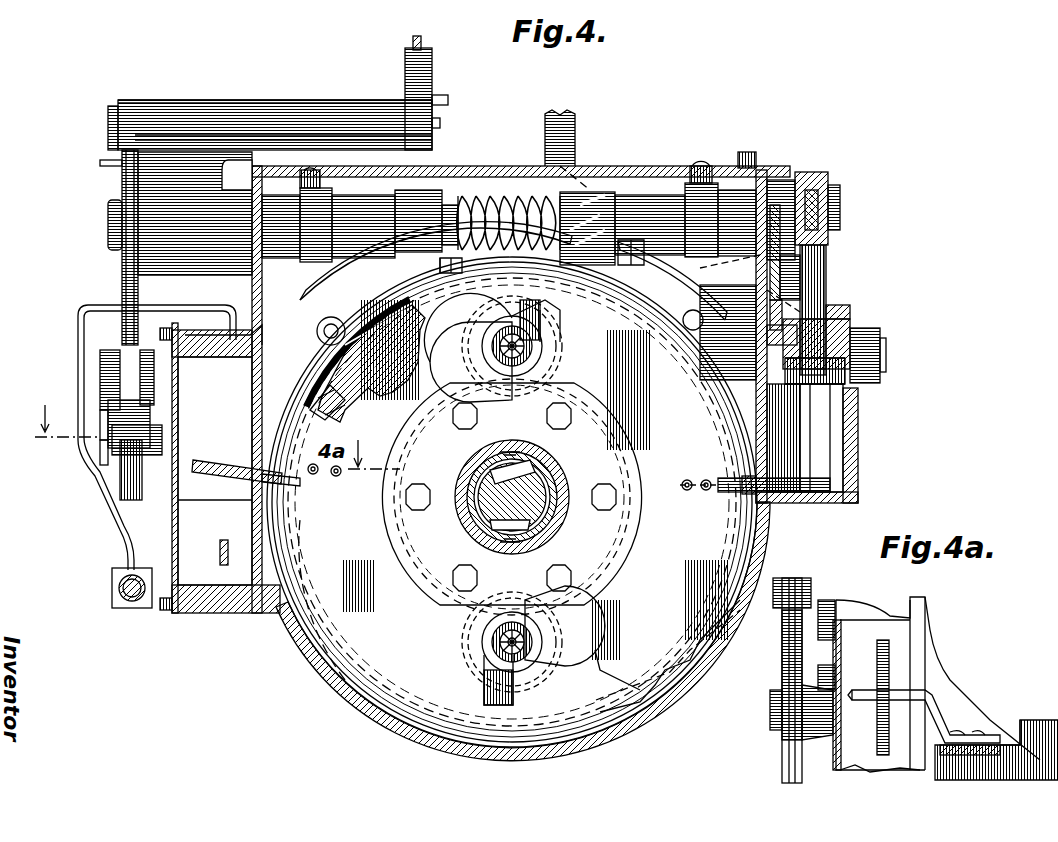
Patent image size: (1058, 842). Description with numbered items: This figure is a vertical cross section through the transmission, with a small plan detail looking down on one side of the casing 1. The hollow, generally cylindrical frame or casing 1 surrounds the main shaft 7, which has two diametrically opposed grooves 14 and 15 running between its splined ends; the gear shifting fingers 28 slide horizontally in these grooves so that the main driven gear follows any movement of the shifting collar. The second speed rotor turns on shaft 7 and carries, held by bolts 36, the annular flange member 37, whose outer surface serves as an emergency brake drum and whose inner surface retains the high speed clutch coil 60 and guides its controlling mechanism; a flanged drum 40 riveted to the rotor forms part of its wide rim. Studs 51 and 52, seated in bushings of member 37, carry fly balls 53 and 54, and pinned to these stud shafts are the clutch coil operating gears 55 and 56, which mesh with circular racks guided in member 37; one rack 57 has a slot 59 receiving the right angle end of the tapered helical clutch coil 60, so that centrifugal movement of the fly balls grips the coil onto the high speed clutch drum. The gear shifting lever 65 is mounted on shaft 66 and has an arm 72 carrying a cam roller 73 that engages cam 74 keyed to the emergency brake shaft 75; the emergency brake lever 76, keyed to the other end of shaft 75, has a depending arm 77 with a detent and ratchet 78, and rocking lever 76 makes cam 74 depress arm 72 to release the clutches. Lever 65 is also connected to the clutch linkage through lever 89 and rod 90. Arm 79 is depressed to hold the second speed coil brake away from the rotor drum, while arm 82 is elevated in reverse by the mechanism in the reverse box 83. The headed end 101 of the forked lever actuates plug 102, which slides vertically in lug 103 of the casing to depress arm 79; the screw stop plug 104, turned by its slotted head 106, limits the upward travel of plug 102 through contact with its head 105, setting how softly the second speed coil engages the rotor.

In FIG. 4, the frame or casing 1 is at (252, 276).
In FIG. 4A, the frame or casing 1 is at (912, 604).
In FIG. 4, the shaft 7 is at (532, 492).
In FIG. 4, the groove 14 is at (520, 475).
In FIG. 4, the groove 15 is at (480, 538).
In FIG. 4, the gear shifting fingers 28 is at (508, 452).
In FIG. 4, the bolts 36 is at (616, 492).
In FIG. 4, the annular flange member 37 is at (388, 626).
In FIG. 4A, the flanged drum 40 is at (1038, 742).
In FIG. 4, the stud 51 is at (528, 348).
In FIG. 4, the stud 52 is at (492, 650).
In FIG. 4, the fly ball 53 is at (466, 356).
In FIG. 4, the fly ball 54 is at (586, 628).
In FIG. 4, the clutch coil operating gear 55 is at (560, 376).
In FIG. 4, the clutch coil operating gear 56 is at (482, 640).
In FIG. 4, the circular rack 57 is at (368, 332).
In FIG. 4, the slot 59 is at (328, 334).
In FIG. 4, the clutch coil 60 is at (348, 410).
In FIG. 4, the gear shifting lever 65 is at (566, 135).
In FIG. 4, the shaft 66 is at (884, 360).
In FIG. 4, the arm 72 is at (770, 320).
In FIG. 4, the cam roller 73 is at (800, 300).
In FIG. 4, the cam 74 is at (780, 290).
In FIG. 4, the emergency brake shaft 75 is at (108, 226).
In FIG. 4, the emergency brake lever 76 is at (430, 86).
In FIG. 4, the depending arm 77 is at (124, 276).
In FIG. 4, the detent and ratchet 78 is at (124, 482).
In FIG. 4A, the detent and ratchet 78 is at (786, 652).
In FIG. 4, the arm 79 is at (804, 490).
In FIG. 4, the arm 82 is at (206, 462).
In FIG. 4A, the arm 82 is at (862, 690).
In FIG. 4, the reverse box 83 is at (192, 536).
In FIG. 4A, the reverse box 83 is at (856, 752).
In FIG. 4, the lever 89 is at (122, 522).
In FIG. 4, the rod 90 is at (114, 587).
In FIG. 4A, the rod 90 is at (782, 750).
In FIG. 4, the headed end 101 is at (830, 208).
In FIG. 4, the plug 102 is at (814, 270).
In FIG. 4, the lug 103 is at (858, 444).
In FIG. 4, the screw stop plug 104 is at (845, 330).
In FIG. 4, the head 105 is at (862, 372).
In FIG. 4, the slotted head 106 is at (848, 310).